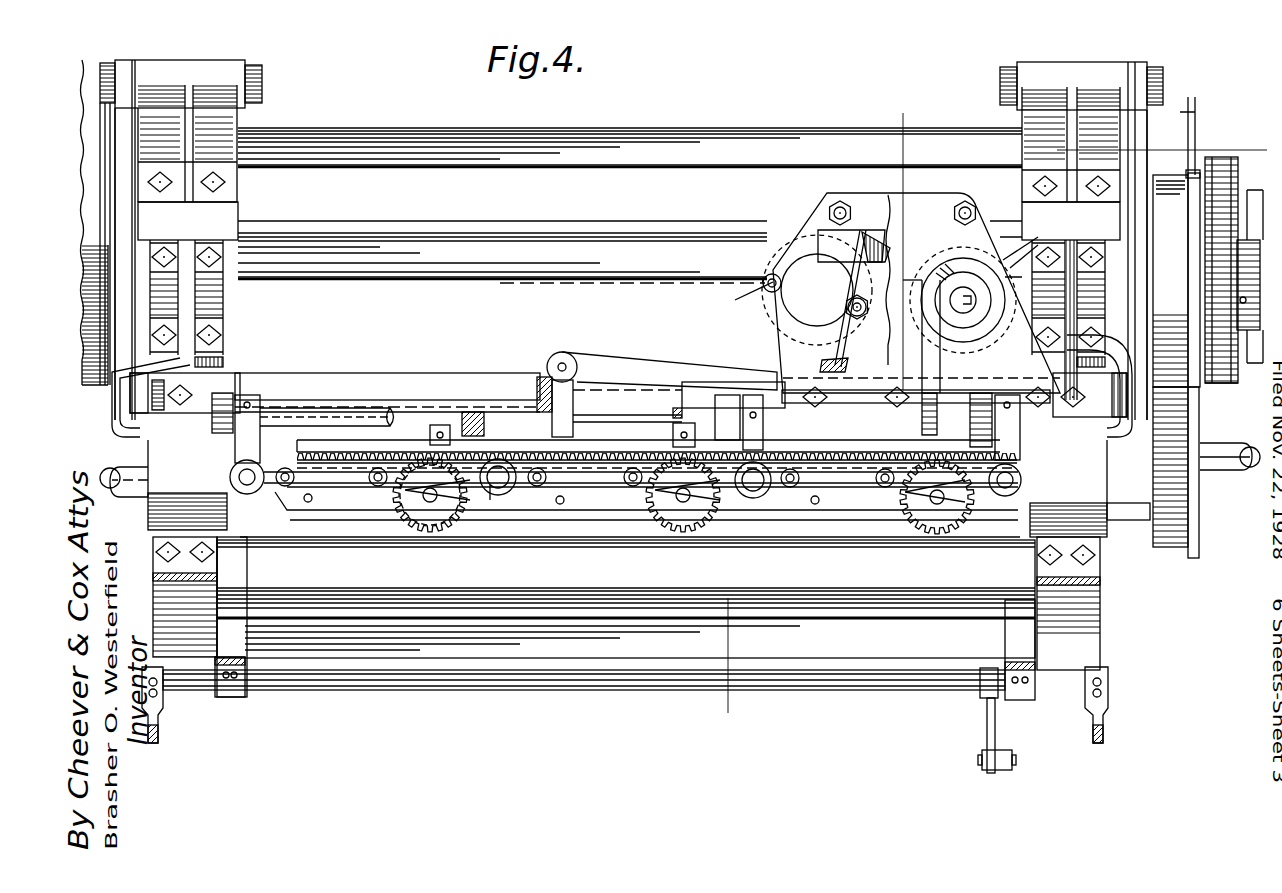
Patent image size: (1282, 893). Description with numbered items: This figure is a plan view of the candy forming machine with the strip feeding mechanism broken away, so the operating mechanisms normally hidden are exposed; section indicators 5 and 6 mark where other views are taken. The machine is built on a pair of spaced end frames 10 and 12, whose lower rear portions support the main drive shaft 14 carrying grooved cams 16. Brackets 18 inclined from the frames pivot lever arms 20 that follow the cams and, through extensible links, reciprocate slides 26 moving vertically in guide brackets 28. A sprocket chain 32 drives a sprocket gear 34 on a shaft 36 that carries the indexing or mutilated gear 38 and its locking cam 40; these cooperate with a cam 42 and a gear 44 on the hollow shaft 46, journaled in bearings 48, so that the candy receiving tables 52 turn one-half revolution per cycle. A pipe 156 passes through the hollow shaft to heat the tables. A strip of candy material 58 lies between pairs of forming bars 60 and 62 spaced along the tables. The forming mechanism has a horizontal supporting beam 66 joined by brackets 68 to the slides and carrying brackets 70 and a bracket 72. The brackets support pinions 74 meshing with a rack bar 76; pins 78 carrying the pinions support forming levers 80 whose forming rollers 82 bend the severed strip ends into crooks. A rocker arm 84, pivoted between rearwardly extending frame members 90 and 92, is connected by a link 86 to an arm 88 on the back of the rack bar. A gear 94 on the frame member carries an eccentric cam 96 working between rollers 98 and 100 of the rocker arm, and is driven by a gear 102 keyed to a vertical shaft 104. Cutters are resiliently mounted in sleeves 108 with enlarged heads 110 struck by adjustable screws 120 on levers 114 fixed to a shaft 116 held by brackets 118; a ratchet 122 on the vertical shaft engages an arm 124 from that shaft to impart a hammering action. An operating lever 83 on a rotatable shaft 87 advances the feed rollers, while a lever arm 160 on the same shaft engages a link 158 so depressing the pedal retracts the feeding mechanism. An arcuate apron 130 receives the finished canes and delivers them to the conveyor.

The section line 5- 5 is at (885, 113).
The section line 6- 6 is at (529, 292).
The end frame 10 is at (1037, 690).
The end frame 12 is at (193, 613).
The main drive shaft 14 is at (340, 232).
The grooved cam 16 is at (110, 88).
The bracket 18 is at (218, 62).
The lever arm 20 is at (120, 300).
The slide 26 is at (130, 392).
The guide bracket 28 is at (140, 470).
The sprocket chain 32 is at (1248, 365).
The sprocket gear 34 is at (1222, 385).
The shaft 36 is at (1242, 332).
The indexing gear 38 is at (1163, 335).
The index gear locking cam 40 is at (1195, 172).
The cam 42 is at (1195, 557).
The gear 44 is at (1168, 547).
The hollow shaft 46 is at (1130, 520).
The bearing 48 is at (128, 500).
The candy receiving table 52 is at (330, 530).
The strip of candy cane material 58 is at (350, 498).
The forming bar 60 is at (298, 440).
The forming bar 62 is at (570, 520).
The horizontal supporting beam 66 is at (330, 378).
The bracket 68 is at (160, 427).
The bracket 70 is at (530, 490).
The bracket 72 is at (268, 490).
The pinion 74 is at (430, 535).
The rack bar 76 is at (405, 440).
The pin 78 is at (612, 503).
The forming lever 80 is at (462, 520).
The forming roller 82 is at (478, 405).
The lever 83 is at (160, 737).
The rocker arm 84 is at (770, 300).
The link 86 is at (620, 365).
The rotatable shaft 87 is at (658, 682).
The arm 88 is at (580, 398).
The frame member 90 is at (935, 205).
The frame member 92 is at (878, 235).
The gear 94 is at (880, 235).
The cam 96 is at (835, 290).
The roller 98 is at (850, 315).
The roller 100 is at (768, 278).
The gear 102 is at (1030, 248).
The vertical shaft 104 is at (966, 310).
The sleeve 108 is at (247, 495).
The enlarged head 110 is at (490, 495).
The lever 114 is at (255, 440).
The shaft 116 is at (365, 407).
The bracket 118 is at (225, 393).
The adjustable screw 120 is at (232, 478).
The ratchet 122 is at (945, 250).
The arm 124 is at (915, 363).
The arcuate apron 130 is at (1222, 165).
The pipe 156 is at (130, 460).
The link 158 is at (995, 770).
The lever arm 160 is at (987, 732).